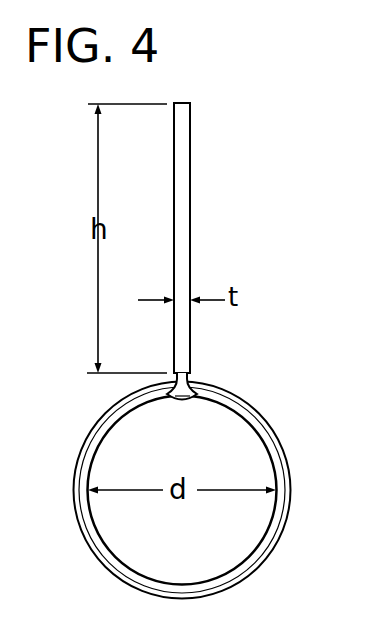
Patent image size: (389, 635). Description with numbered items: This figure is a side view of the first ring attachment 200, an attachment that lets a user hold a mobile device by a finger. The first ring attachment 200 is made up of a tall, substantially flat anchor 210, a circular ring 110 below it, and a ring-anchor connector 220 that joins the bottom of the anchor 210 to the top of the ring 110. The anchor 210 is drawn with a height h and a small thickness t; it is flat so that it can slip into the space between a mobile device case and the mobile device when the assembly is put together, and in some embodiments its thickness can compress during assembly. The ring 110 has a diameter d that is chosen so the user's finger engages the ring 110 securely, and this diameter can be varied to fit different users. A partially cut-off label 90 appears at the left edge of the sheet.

The first ring attachment 200 is at (217, 71).
The anchor 210 is at (190, 248).
The ring-anchor connector 220 is at (194, 386).
The ring 110 is at (253, 408).
The partially visible reference numeral 90 is at (10, 160).